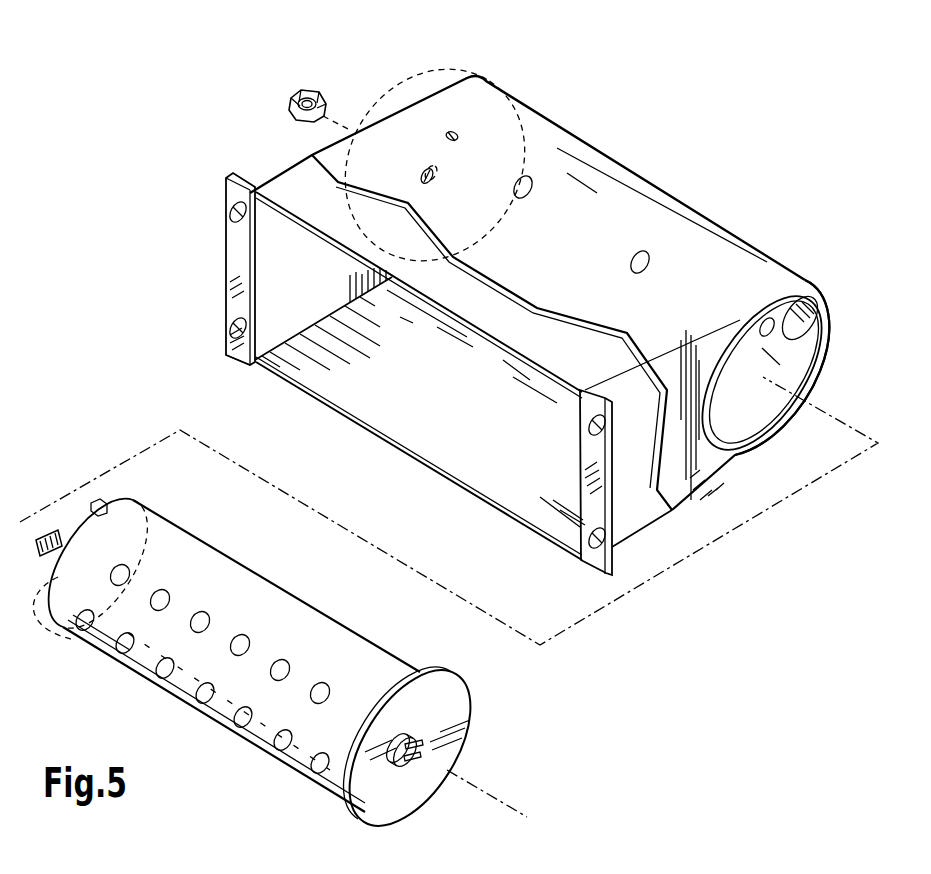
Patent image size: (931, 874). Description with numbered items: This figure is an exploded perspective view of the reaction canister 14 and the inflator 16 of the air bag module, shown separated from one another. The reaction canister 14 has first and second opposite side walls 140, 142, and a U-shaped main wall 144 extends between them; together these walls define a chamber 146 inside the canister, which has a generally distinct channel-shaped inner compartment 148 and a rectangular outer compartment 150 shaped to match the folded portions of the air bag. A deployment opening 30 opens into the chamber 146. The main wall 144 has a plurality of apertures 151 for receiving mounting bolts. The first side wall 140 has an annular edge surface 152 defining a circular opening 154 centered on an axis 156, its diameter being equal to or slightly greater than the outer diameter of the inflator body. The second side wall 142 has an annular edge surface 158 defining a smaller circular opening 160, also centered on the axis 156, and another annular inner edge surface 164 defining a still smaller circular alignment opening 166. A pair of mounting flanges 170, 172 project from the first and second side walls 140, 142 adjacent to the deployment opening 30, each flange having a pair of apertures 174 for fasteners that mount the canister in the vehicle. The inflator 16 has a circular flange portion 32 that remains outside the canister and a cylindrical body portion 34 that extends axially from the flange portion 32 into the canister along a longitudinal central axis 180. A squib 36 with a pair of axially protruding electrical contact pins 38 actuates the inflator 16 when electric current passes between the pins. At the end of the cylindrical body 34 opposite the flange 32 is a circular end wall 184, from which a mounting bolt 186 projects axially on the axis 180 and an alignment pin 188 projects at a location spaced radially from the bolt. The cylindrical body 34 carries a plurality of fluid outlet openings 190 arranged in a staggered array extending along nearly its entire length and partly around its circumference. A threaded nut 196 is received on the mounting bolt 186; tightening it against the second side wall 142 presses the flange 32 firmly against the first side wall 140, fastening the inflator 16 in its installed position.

The reaction canister 14 is at (240, 84).
The inflator 16 is at (545, 718).
The deployment opening 30 is at (342, 418).
The circular flange portion 32 is at (413, 667).
The cylindrical body portion 34 is at (217, 716).
The squib 36 is at (430, 735).
The electrical contact pins 38 is at (410, 762).
The first side wall 140 is at (700, 482).
The second side wall 142 is at (240, 292).
The U-shaped main wall 144 is at (541, 233).
The chamber 146 is at (408, 440).
The inner compartment 148 is at (722, 395).
The outer compartment 150 is at (458, 457).
The apertures 151 is at (744, 321).
The annular edge surface 152 is at (783, 323).
The circular opening 154 is at (824, 316).
The axis 156 is at (830, 413).
The annular edge surface 158 is at (426, 184).
The smaller circular opening 160 is at (414, 176).
The annular inner edge surface 164 is at (533, 112).
The circular alignment opening 166 is at (438, 125).
The mounting flange 170 is at (598, 568).
The mounting flange 172 is at (240, 345).
The apertures 174 is at (226, 204).
The longitudinal central axis 180 is at (497, 793).
The circular end wall 184 is at (40, 633).
The mounting bolt 186 is at (57, 533).
The alignment pin 188 is at (95, 505).
The fluid outlet openings 190 is at (317, 678).
The threaded nut 196 is at (300, 95).